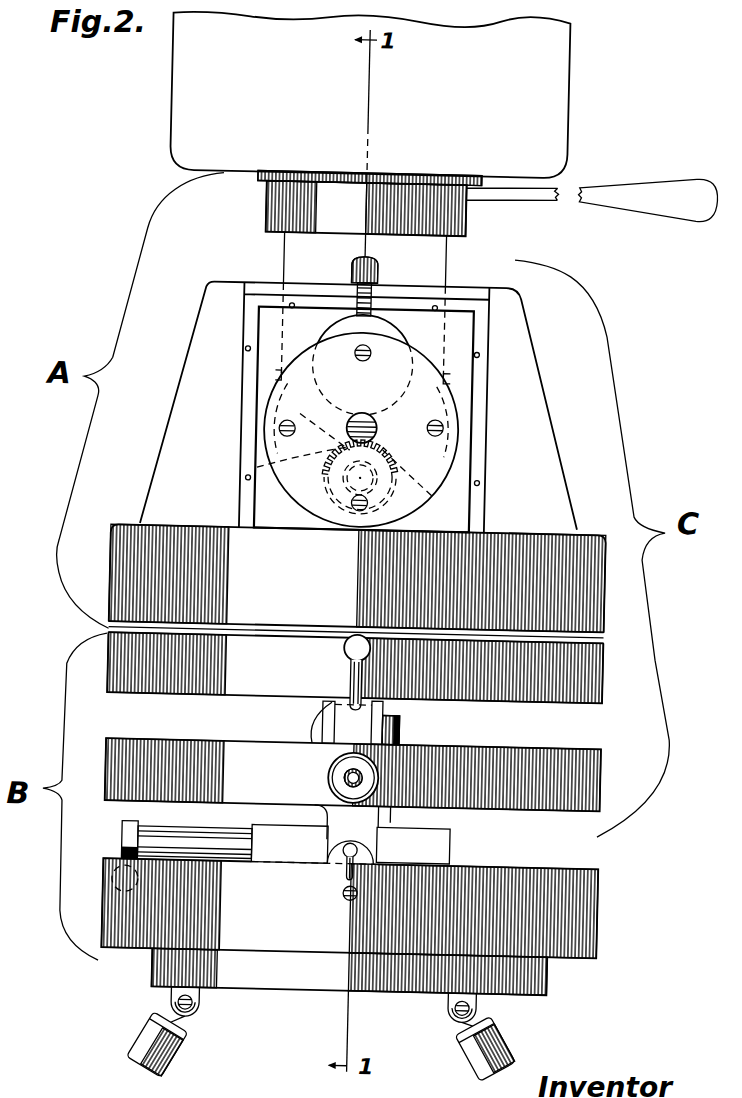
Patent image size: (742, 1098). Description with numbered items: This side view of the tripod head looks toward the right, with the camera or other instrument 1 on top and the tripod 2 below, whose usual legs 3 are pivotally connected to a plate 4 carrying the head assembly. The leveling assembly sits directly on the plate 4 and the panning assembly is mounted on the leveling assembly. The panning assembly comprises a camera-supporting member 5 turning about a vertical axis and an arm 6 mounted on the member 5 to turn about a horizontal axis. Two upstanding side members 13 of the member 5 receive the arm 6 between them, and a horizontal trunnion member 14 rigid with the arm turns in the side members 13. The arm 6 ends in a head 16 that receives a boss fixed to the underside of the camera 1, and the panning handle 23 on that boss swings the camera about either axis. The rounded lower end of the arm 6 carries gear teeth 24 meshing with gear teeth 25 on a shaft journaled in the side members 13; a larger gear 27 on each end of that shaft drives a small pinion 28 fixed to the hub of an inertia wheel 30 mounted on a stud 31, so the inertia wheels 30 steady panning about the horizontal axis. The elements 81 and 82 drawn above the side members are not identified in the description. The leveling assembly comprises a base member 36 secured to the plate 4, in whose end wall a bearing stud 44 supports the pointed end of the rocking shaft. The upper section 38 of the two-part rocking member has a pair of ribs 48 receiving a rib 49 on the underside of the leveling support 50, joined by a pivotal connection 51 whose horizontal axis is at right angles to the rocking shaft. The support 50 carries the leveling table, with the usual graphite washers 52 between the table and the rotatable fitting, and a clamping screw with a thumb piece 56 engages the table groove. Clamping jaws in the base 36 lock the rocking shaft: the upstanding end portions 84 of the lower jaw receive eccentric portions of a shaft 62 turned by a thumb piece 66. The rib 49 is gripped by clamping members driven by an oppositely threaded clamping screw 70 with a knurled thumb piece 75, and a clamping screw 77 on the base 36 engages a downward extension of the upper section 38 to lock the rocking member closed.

The camera or other instrument 1 is at (548, 76).
The tripod 2 is at (152, 1038).
The legs 3 is at (198, 1062).
The plate 4 is at (549, 981).
The camera-supporting member 5 is at (619, 547).
The arm 6 is at (305, 257).
The side members 13 is at (509, 337).
The trunnion member 14 is at (390, 330).
The head 16 is at (471, 198).
The panning handle 23 is at (536, 196).
The gear teeth 24 is at (267, 470).
The gear teeth 25 is at (357, 468).
The gear 27 is at (325, 427).
The pinion 28 is at (420, 482).
The inertia wheel 30 is at (455, 460).
The stud 31 is at (384, 415).
The base member 36 is at (592, 900).
The upper section 38 is at (584, 762).
The bearing stud 44 is at (369, 896).
The ribs 48 is at (340, 721).
The rib 49 is at (351, 729).
The leveling support 50 is at (596, 667).
The pivotal connection 51 is at (416, 727).
The graphite washers 52 is at (286, 635).
The handle or thumb piece 56 is at (364, 672).
The shaft 62 is at (218, 842).
The thumb piece 66 is at (140, 854).
The clamping screw 70 is at (365, 776).
The knurled thumb piece 75 is at (352, 779).
The clamping screw 77 is at (369, 862).
The threaded screw 81 is at (358, 288).
The screw head 82 is at (382, 268).
The upstanding end portions 84 is at (456, 844).